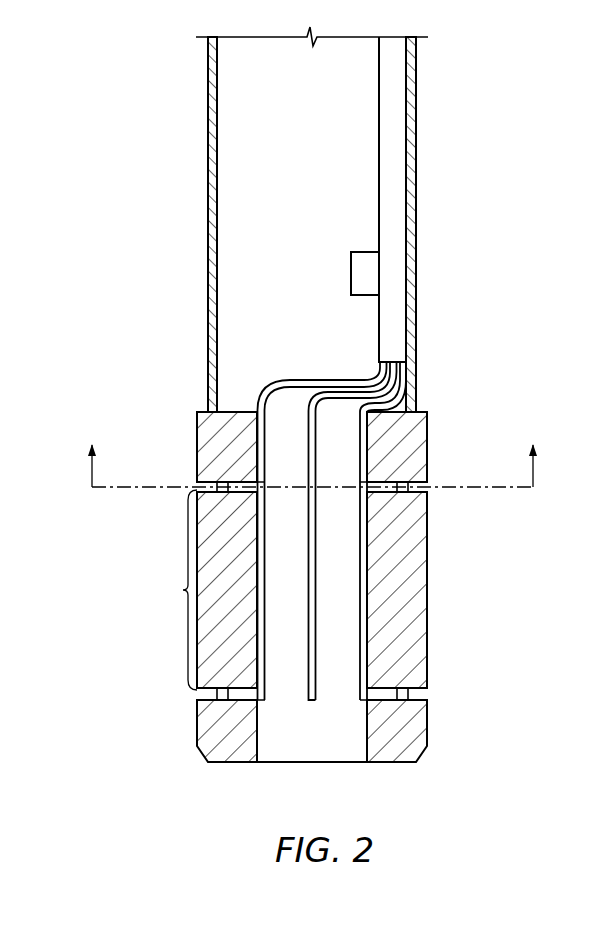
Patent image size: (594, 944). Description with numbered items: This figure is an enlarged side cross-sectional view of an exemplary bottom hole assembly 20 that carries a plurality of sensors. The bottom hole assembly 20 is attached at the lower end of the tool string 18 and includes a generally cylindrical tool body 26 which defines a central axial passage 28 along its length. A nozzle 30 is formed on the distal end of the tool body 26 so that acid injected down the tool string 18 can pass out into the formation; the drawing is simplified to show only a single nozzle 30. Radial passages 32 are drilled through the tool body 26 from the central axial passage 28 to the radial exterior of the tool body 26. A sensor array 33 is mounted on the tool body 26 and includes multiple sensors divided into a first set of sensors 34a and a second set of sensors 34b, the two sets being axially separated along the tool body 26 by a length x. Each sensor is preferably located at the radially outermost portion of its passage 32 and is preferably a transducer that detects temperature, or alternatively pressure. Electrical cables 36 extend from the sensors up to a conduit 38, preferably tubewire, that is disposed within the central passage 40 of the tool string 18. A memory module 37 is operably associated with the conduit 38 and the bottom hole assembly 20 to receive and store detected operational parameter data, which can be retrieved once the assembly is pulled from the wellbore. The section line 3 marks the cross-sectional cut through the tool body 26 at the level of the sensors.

The tool string 18 is at (209, 108).
The central passage 40 is at (283, 217).
The conduit 38 is at (392, 163).
The memory module 37 is at (363, 273).
The electrical cables 36 is at (358, 570).
The sensor array 33 is at (434, 448).
The tool body 26 is at (215, 626).
The bottom hole assembly 20 is at (434, 592).
The central axial passage 28 is at (258, 750).
The nozzle 30 is at (367, 750).
The first set of sensors 34a is at (195, 490).
The second set of sensors 34b is at (196, 693).
The radial passages 32 is at (397, 482).
The length x is at (185, 590).
The section line 3- 3 is at (312, 446).